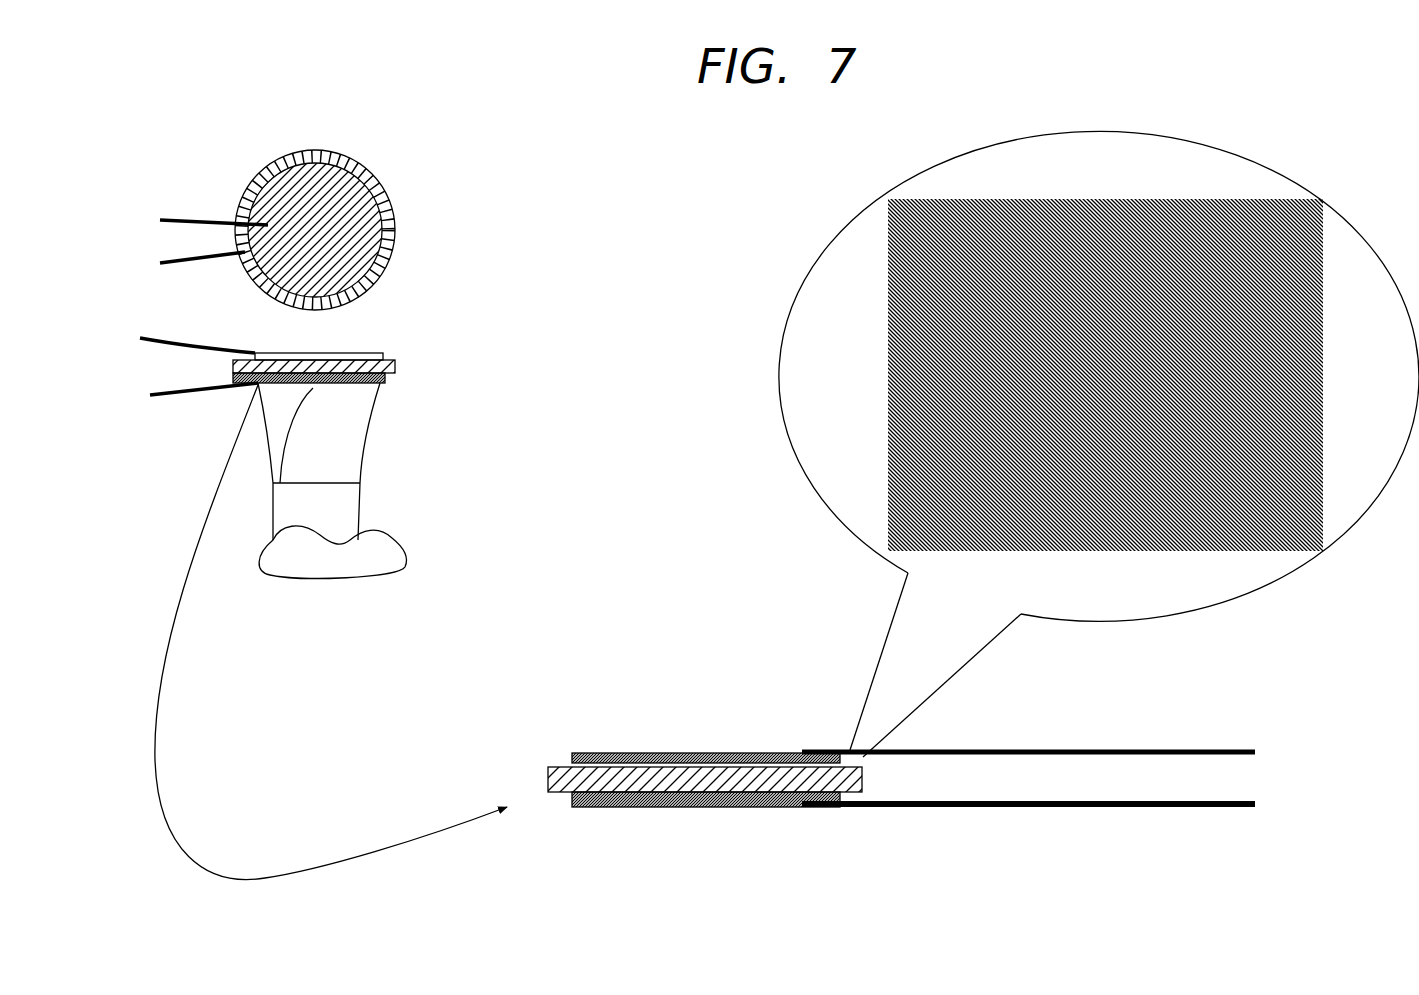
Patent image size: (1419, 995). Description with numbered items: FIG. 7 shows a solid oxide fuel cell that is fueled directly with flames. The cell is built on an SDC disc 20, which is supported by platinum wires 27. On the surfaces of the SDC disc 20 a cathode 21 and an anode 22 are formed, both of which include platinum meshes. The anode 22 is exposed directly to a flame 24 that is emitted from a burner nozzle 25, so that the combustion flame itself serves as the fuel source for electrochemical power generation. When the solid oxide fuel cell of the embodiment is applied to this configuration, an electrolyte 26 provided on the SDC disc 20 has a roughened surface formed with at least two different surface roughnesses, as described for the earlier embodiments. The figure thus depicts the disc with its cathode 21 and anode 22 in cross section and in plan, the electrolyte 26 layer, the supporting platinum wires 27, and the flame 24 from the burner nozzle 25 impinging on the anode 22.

The SDC disc 20 is at (345, 140).
The cathode 21 is at (370, 174).
The anode 22 is at (375, 385).
The flame 24 is at (358, 435).
The burner nozzle 25 is at (352, 516).
The electrolyte 26 is at (392, 212).
The platinum wires 27 is at (1113, 750).